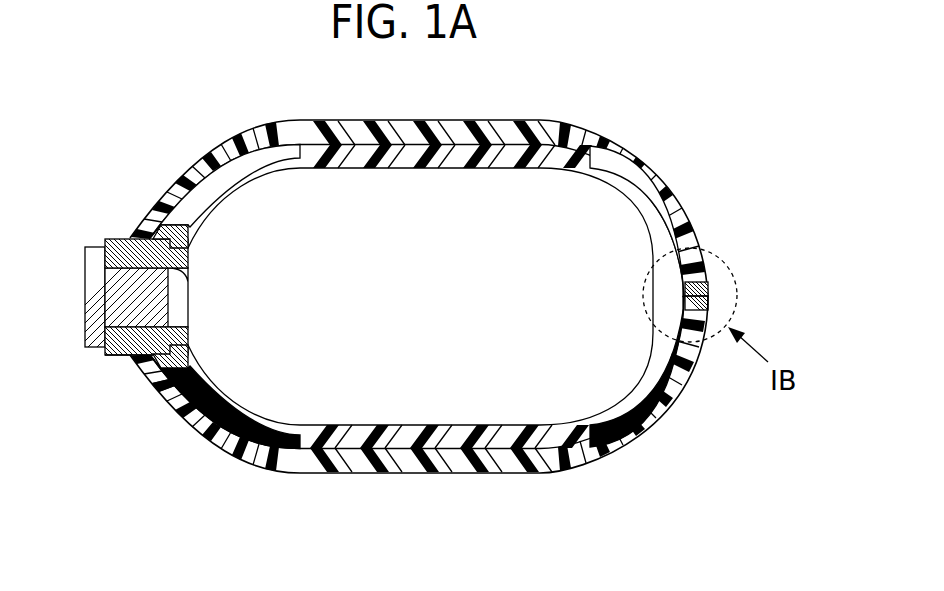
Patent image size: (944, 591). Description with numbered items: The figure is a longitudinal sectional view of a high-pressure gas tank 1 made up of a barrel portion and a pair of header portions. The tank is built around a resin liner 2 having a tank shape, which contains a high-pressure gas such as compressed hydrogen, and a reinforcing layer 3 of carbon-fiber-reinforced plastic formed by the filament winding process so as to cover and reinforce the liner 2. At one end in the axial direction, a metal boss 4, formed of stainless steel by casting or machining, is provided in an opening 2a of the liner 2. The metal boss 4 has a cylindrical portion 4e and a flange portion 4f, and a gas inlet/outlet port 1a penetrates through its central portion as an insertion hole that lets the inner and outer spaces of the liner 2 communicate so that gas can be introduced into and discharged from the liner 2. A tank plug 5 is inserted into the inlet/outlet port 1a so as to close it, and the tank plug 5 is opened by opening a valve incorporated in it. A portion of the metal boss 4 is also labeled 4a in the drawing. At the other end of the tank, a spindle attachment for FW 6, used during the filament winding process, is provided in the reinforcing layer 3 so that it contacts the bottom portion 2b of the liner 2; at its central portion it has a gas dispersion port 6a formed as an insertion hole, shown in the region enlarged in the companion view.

The high-pressure gas tank 1 is at (524, 105).
The gas inlet/outlet port 1a is at (190, 284).
The liner 2 is at (637, 196).
The opening 2a is at (190, 243).
The bottom portion 2b is at (650, 297).
The reinforcing layer 3 is at (625, 151).
The metal boss 4 is at (107, 229).
The boss flange portion 4a is at (190, 338).
The cylindrical portion 4e is at (121, 357).
The flange portion 4f is at (151, 394).
The tank plug 5 is at (88, 293).
The spindle attachment for FW 6 is at (703, 286).
The gas dispersion port 6a is at (705, 298).